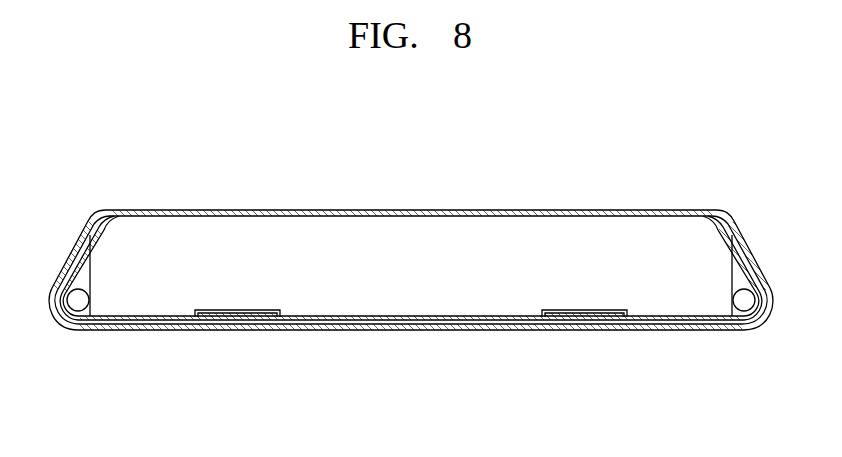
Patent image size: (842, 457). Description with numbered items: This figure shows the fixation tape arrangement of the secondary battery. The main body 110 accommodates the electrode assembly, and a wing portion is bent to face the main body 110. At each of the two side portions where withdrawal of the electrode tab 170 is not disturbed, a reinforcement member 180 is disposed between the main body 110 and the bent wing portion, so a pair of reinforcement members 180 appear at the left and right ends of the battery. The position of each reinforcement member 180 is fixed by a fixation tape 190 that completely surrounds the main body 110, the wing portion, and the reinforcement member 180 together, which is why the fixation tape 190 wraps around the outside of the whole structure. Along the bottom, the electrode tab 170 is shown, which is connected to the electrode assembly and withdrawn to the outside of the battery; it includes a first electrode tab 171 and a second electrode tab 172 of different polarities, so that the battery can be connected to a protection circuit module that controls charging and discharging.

The main body 110 is at (407, 237).
The fixation tape 190 is at (609, 212).
The reinforcement member 180 is at (77, 305).
The electrode tab 170 is at (411, 369).
The first electrode tab 171 is at (237, 369).
The second electrode tab 172 is at (584, 369).